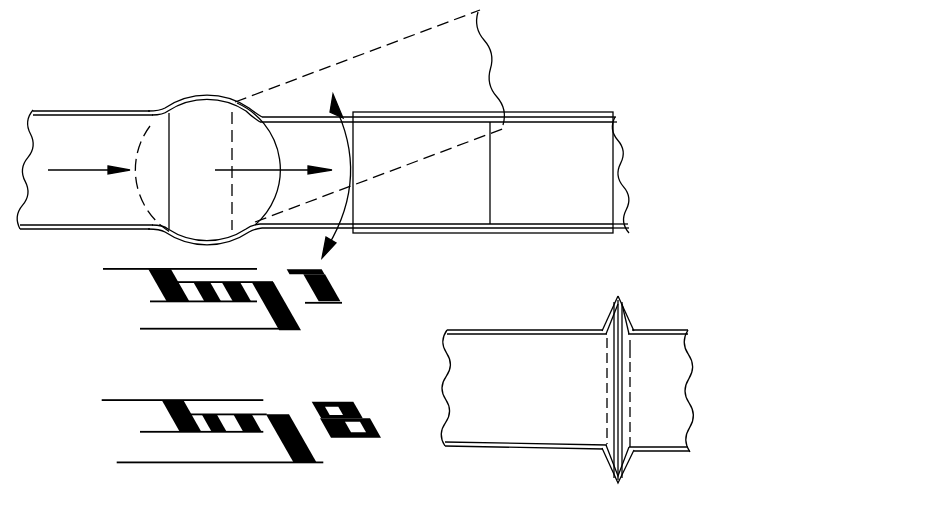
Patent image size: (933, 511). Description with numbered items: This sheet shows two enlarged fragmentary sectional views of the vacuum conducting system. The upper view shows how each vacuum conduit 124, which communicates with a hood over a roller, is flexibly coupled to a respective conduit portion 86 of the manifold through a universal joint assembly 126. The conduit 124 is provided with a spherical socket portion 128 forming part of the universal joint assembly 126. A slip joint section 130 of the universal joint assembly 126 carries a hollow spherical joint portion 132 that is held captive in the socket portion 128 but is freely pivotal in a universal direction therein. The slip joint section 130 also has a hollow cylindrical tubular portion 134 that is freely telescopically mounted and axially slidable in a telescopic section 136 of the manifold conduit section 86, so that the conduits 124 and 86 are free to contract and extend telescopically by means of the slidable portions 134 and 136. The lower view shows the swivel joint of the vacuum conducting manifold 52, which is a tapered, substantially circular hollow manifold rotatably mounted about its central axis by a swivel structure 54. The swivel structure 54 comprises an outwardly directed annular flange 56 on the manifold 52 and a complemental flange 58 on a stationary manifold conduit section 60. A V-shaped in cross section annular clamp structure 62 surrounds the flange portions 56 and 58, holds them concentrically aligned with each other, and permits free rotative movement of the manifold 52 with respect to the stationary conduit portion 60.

In FIG. 7, the conduit portion of the manifold 86 is at (563, 123).
In FIG. 7, the vacuum conduit 124 is at (127, 110).
In FIG. 7, the universal joint assembly 126 is at (203, 95).
In FIG. 7, the spherical socket portion 128 is at (193, 94).
In FIG. 7, the slip joint section 130 is at (310, 117).
In FIG. 7, the hollow spherical joint portion 132 is at (202, 107).
In FIG. 7, the hollow cylindrical tubular portion 134 is at (462, 122).
In FIG. 7, the telescopic section 136 is at (407, 112).
In FIG. 8, the vacuum conducting manifold 52 is at (531, 329).
In FIG. 8, the swivel structure 54 is at (636, 315).
In FIG. 8, the annular flange 56 is at (613, 341).
In FIG. 8, the complemental flange 58 is at (629, 378).
In FIG. 8, the stationary manifold conduit section 60 is at (645, 428).
In FIG. 8, the annular clamp structure 62 is at (621, 485).